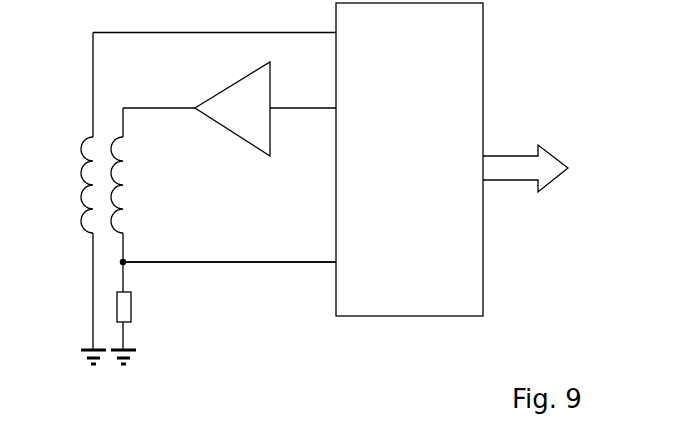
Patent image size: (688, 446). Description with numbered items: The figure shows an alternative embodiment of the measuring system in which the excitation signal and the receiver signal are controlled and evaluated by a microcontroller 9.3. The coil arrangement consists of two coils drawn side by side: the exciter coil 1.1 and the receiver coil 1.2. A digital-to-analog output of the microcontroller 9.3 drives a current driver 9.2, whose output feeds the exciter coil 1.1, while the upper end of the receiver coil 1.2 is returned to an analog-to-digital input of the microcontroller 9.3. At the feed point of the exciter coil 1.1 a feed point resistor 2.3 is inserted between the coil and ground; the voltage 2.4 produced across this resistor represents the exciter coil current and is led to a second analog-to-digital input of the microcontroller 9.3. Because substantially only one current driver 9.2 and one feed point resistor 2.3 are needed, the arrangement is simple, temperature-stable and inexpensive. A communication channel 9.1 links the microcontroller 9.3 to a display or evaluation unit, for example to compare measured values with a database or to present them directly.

The exciter coil 1.1 is at (128, 178).
The receiver coil 1.2 is at (90, 232).
The feed point resistor 2.3 is at (131, 303).
The voltage 2.4 is at (170, 258).
The communication channel 9.1 is at (546, 168).
The current driver 9.2 is at (228, 100).
The microcontroller 9.3 is at (446, 211).